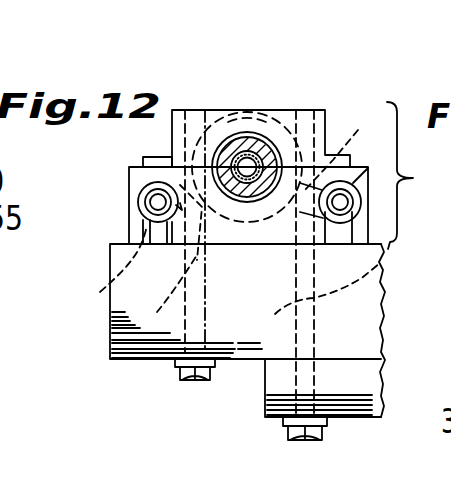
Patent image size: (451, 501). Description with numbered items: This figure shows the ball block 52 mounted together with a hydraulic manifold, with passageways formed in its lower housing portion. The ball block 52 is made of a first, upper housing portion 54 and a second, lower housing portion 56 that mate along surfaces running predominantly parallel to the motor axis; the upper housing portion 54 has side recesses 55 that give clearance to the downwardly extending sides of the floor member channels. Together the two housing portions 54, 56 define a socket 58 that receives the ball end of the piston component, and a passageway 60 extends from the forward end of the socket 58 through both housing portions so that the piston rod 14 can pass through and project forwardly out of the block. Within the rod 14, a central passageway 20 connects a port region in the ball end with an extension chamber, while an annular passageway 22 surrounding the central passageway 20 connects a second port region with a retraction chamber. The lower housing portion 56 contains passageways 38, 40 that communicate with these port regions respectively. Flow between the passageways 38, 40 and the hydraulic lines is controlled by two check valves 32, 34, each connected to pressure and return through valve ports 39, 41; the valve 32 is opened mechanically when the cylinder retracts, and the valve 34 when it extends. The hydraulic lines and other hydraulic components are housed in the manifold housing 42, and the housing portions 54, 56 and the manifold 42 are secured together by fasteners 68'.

The central passageway 20 is at (246, 165).
The annular passageway 22 is at (234, 158).
The socket 58 is at (259, 118).
The first housing portion 54 is at (287, 125).
The passageway 40 is at (336, 141).
The check valve 34 is at (356, 184).
The check valve 32 is at (138, 202).
The side recess 55 is at (163, 156).
The second housing portion 56 is at (128, 230).
The valve port 39 is at (79, 308).
The passageway 38 is at (154, 315).
The passageway 60 is at (262, 200).
The piston rod 14 is at (246, 172).
The valve port 41 is at (265, 330).
The manifold housing 42 is at (278, 383).
The fasteners 68' is at (412, 261).
The ball block 52 is at (419, 175).